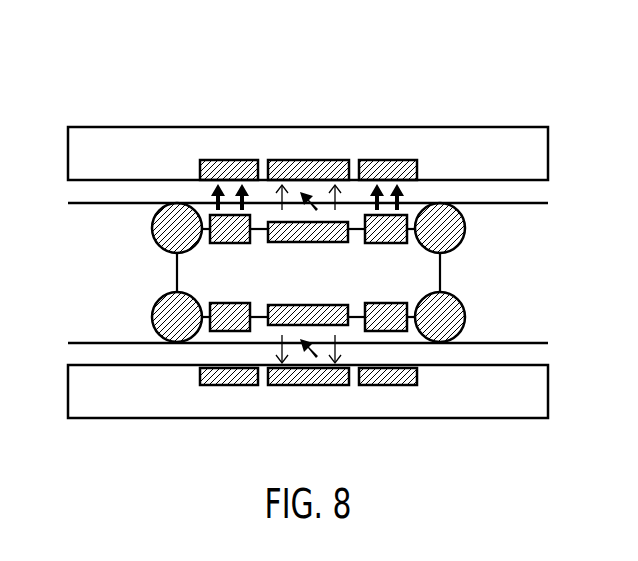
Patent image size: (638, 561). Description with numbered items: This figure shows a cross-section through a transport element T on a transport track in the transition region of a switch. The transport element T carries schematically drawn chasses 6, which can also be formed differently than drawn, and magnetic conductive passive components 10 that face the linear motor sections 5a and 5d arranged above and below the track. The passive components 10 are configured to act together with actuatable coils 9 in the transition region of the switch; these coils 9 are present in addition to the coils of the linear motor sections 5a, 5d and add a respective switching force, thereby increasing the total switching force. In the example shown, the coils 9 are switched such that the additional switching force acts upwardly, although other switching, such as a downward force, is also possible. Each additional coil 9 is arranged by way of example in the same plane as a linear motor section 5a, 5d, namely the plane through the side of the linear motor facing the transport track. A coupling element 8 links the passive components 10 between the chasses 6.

The linear motor section 5a is at (293, 167).
The linear motor section 5d is at (293, 386).
The chassis 6 is at (160, 226).
The coupling element 8 is at (278, 244).
The actuatable coil 9 is at (235, 167).
The magnetic conductive passive component 10 is at (210, 215).
The transport element T is at (410, 276).